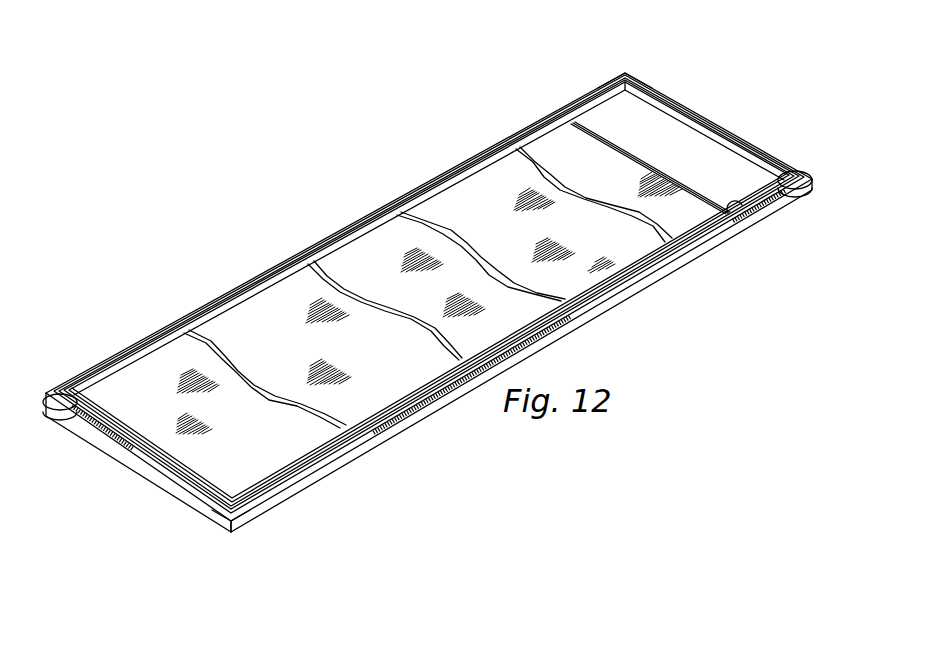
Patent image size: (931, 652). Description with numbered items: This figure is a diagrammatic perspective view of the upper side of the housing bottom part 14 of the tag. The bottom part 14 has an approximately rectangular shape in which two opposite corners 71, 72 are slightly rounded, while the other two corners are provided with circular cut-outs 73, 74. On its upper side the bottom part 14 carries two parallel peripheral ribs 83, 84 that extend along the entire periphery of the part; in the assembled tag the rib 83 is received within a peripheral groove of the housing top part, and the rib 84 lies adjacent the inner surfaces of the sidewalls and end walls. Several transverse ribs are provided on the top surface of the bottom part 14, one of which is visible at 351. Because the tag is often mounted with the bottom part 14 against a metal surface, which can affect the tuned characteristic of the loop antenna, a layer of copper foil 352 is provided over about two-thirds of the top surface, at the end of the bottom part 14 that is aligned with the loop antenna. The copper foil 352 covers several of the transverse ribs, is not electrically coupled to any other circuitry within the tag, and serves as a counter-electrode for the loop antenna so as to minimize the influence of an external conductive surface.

The bottom part 14 is at (440, 171).
The corner 71 is at (230, 535).
The corner 72 is at (622, 71).
The circular cut-out 73 is at (793, 184).
The circular cut-out 74 is at (73, 398).
The peripheral rib 83 is at (662, 92).
The peripheral rib 84 is at (712, 128).
The transverse rib 351 is at (750, 210).
The layer of copper foil 352 is at (590, 267).